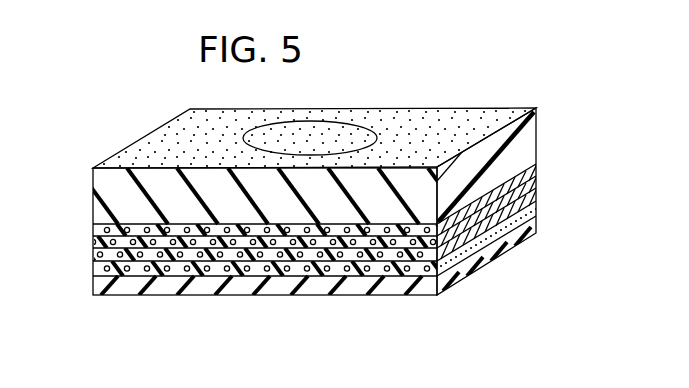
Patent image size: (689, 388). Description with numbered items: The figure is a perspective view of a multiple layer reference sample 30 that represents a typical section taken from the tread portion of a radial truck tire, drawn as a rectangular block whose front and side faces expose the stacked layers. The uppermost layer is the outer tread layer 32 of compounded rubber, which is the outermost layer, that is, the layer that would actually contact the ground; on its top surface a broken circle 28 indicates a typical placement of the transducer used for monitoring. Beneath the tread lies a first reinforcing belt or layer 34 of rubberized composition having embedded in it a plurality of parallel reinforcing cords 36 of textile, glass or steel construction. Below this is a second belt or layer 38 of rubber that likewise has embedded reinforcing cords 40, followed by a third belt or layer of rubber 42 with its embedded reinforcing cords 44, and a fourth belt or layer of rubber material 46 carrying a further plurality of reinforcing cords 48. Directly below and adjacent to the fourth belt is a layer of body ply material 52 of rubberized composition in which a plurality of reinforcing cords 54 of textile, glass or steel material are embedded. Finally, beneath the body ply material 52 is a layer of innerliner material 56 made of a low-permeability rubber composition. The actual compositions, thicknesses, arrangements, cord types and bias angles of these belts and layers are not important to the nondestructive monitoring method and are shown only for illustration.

The broken circle 28 is at (308, 120).
The multiple layer reference sample 30 is at (240, 318).
The outer tread layer 32 is at (530, 147).
The first reinforcing belt or layer 34 is at (93, 232).
The reinforcing cords 36 is at (128, 222).
The second belt or layer 38 is at (93, 246).
The reinforcing cords 40 is at (172, 246).
The third belt or layer of rubber 42 is at (100, 257).
The reinforcing cords 44 is at (180, 258).
The fourth belt or layer of rubber material 46 is at (93, 268).
The reinforcing cords 48 is at (152, 264).
The body ply material 52 is at (287, 277).
The reinforcing cords 54 is at (462, 265).
The innerliner material 56 is at (340, 287).